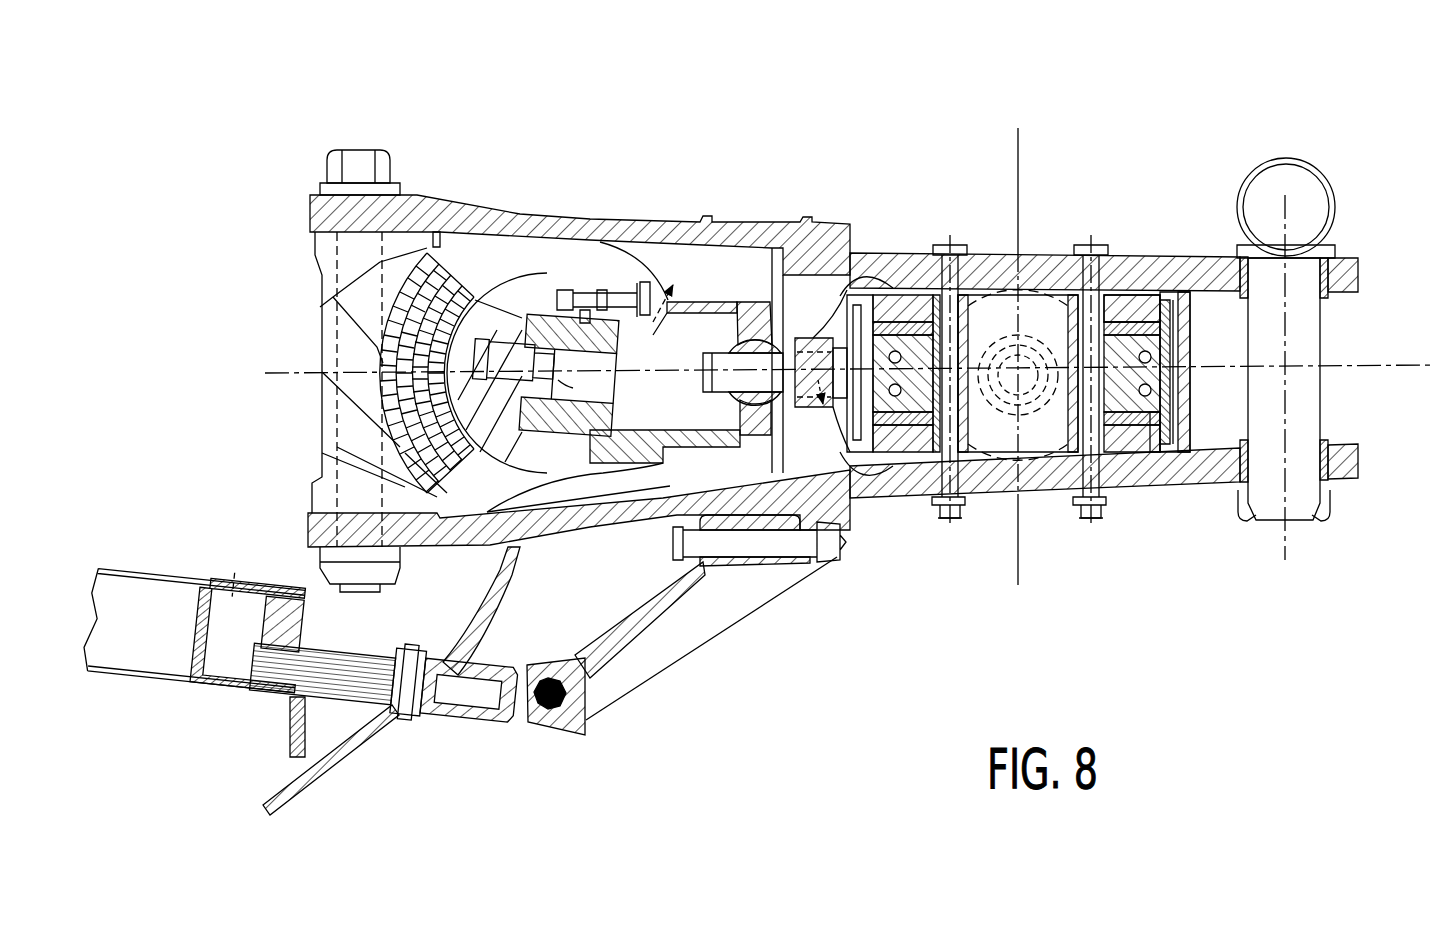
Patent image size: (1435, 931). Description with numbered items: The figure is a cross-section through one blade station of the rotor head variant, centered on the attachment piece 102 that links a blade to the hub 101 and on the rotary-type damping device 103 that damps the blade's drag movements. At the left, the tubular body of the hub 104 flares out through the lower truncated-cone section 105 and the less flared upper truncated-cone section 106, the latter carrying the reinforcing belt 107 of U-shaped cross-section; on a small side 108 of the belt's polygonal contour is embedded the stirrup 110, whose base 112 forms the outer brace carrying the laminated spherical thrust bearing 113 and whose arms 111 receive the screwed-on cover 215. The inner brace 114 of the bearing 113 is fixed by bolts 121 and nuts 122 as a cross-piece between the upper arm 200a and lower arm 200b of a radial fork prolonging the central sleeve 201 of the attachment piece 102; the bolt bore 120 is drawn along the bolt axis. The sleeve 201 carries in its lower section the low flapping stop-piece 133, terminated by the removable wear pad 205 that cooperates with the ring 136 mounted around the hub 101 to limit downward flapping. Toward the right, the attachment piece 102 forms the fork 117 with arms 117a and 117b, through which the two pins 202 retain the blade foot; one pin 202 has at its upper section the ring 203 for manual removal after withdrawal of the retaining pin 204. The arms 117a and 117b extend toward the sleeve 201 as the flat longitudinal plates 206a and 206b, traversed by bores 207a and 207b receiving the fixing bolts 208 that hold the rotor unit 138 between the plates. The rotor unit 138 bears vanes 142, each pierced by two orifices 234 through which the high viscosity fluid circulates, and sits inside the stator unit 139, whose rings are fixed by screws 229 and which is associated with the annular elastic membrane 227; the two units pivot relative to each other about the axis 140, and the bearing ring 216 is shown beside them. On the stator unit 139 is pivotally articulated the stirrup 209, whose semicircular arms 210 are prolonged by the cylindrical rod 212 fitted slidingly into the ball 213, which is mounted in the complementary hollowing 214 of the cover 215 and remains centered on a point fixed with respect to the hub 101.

The hub 101 is at (178, 726).
The attachment piece 102 is at (1130, 362).
The rotary-type damping device 103 is at (1155, 424).
The tubular body of the hub 104 is at (426, 748).
The lower truncated-cone section 105 is at (340, 744).
The upper truncated-cone section 106 is at (499, 602).
The reinforcing belt 107 is at (570, 430).
The small side 108 is at (583, 322).
The stirrup 110 is at (510, 300).
The arms of the stirrup 111 is at (540, 460).
The base of the stirrup 112 is at (333, 297).
The laminated spherical thrust bearing 113 is at (355, 450).
The inner brace 114 is at (352, 407).
The fork 117 is at (1195, 252).
The upper arm of the fork 117a is at (1347, 256).
The lower arm of the fork 117b is at (1340, 444).
The bolt bore 120 is at (350, 348).
The bolts 121 is at (357, 165).
The nuts 122 is at (367, 574).
The low flapping stop-piece 133 is at (635, 652).
The ring 136 is at (385, 732).
The rotor unit 138 is at (977, 447).
The stator unit 139 is at (1190, 372).
The relative pivoting axis 140 is at (1021, 198).
The vanes of the rotor unit 142 is at (907, 298).
The upper arm 200a is at (628, 230).
The lower arm 200b is at (663, 600).
The central sleeve 201 is at (750, 470).
The pins 202 is at (1272, 498).
The ring 203 is at (1312, 172).
The retaining pin 204 is at (1320, 525).
The removable wear pad 205 is at (529, 705).
The upper longitudinal plate 206a is at (993, 257).
The lower longitudinal plate 206b is at (1023, 569).
The bores 207a is at (929, 255).
The bores 207b is at (954, 518).
The fixing bolts 208 is at (925, 498).
The stirrup 209 is at (842, 440).
The arms of the stirrup 210 is at (1048, 307).
The cylindrical rod 212 is at (703, 380).
The ball 213 is at (778, 325).
The complementary hollowing 214 is at (748, 336).
The cover 215 is at (707, 292).
The bearing ring 216 is at (1142, 297).
The annular elastic membrane 227 is at (1150, 440).
The screws 229 is at (1215, 403).
The orifices 234 is at (1188, 356).